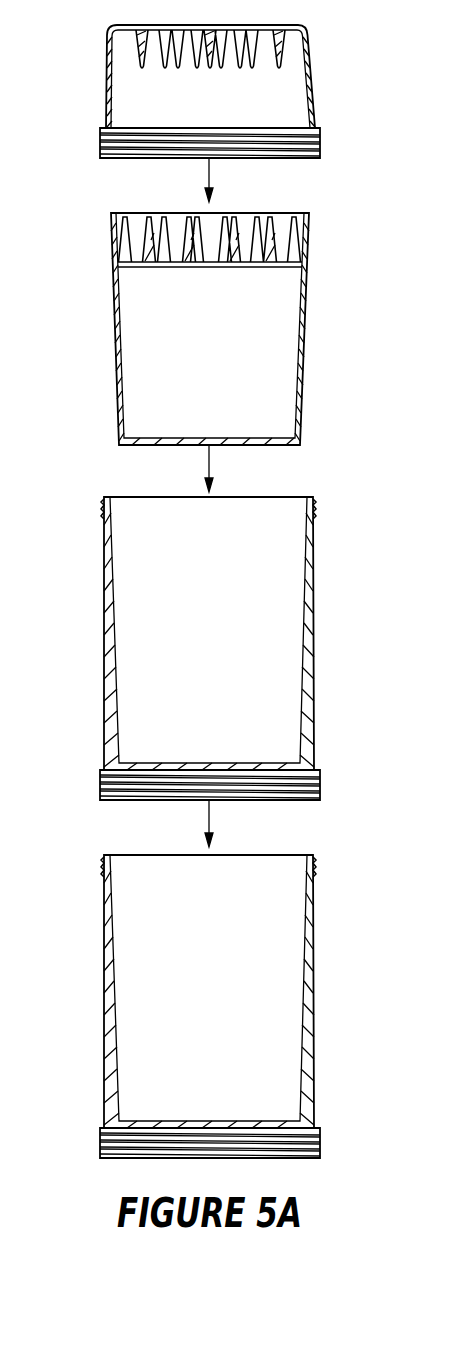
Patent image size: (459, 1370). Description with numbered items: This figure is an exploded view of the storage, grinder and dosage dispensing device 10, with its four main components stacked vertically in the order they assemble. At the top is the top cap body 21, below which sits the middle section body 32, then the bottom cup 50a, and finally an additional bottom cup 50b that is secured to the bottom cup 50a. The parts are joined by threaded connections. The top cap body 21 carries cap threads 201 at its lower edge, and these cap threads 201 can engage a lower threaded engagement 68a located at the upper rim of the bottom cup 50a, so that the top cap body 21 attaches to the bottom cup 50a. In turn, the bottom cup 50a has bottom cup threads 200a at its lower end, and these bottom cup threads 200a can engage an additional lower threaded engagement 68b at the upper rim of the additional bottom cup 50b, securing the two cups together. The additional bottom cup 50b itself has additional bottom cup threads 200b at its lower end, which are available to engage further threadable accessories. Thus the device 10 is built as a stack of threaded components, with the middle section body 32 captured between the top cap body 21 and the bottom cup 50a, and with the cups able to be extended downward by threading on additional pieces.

The storage, grinder and dosage dispensing device 10 is at (64, 51).
The top cap body 21 is at (313, 73).
The cap threads 201 is at (100, 140).
The middle section body 32 is at (303, 330).
The bottom cup 50a is at (311, 614).
The lower threaded engagement 68a is at (314, 502).
The bottom cup threads 200a is at (100, 783).
The additional bottom cup 50b is at (311, 990).
The additional lower threaded engagement 68b is at (314, 860).
The additional bottom cup threads 200b is at (100, 1141).